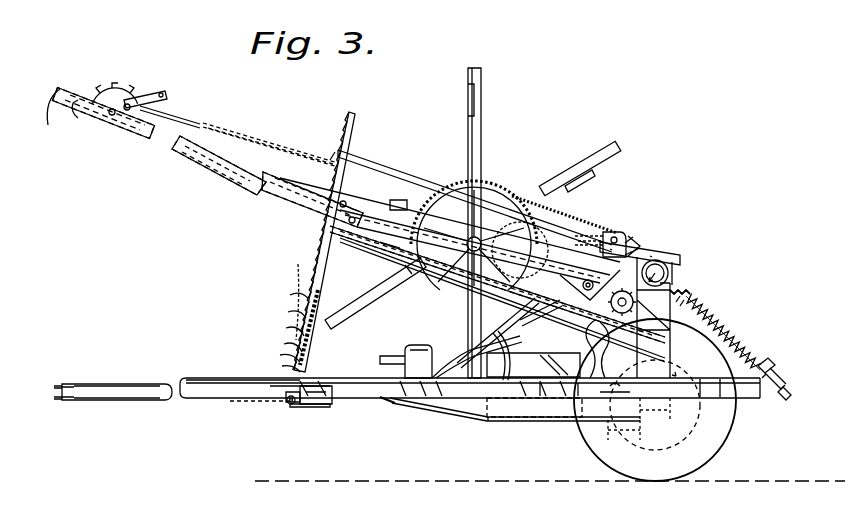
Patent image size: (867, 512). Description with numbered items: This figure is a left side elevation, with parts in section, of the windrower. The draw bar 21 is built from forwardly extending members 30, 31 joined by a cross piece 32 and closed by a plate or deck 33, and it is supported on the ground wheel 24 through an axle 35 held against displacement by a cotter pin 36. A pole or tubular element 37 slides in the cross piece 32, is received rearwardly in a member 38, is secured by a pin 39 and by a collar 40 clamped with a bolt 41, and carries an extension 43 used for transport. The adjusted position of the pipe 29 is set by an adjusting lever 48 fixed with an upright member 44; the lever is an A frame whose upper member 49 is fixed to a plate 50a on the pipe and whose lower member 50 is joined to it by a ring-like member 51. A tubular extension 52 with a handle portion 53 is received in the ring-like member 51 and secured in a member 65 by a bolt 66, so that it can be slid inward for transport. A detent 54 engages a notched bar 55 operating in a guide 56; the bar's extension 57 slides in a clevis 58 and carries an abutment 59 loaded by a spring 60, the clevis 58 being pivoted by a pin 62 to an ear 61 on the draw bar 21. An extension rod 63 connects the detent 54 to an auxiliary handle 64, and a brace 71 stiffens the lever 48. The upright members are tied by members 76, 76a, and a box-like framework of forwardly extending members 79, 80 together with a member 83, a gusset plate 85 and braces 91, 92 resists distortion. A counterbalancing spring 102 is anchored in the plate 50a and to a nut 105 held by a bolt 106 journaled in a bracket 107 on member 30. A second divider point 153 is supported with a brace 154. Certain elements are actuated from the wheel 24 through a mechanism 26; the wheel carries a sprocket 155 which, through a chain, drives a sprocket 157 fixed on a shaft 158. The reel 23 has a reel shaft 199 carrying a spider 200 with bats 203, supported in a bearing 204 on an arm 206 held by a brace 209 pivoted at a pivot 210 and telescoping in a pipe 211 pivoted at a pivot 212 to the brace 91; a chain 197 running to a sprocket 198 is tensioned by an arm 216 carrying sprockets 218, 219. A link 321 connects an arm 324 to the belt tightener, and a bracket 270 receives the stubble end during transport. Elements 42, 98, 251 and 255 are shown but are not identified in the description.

The draw bar 21 is at (433, 422).
The reel 23 is at (612, 122).
The ground wheel 24 is at (720, 452).
The mechanism 26 is at (638, 238).
The pipe 29 is at (670, 270).
The forwardly extending member 30 is at (724, 388).
The forwardly extending member 31 is at (318, 405).
The cross piece 32 is at (290, 406).
The plate 33 is at (338, 360).
The axle 35 is at (668, 398).
The cotter pin 36 is at (640, 395).
The pole 37 is at (205, 377).
The member 38 is at (292, 404).
The pin 39 is at (306, 408).
The collar 40 is at (282, 375).
The bolt 41 is at (285, 404).
The tongue tube 42 is at (61, 377).
The extension 43 is at (362, 376).
The upright member 44 is at (676, 376).
The adjusting lever 48 is at (242, 161).
The upper member 49 is at (575, 224).
The lower member 50 is at (386, 250).
The plate 50a is at (690, 275).
The ring-like member 51 is at (268, 195).
The tubular extension 52 is at (192, 150).
The handle portion 53 is at (74, 114).
The detent 54 is at (304, 234).
The notched bar 55 is at (298, 266).
The guide 56 is at (604, 342).
The extension 57 is at (286, 312).
The clevis 58 is at (288, 295).
The abutment 59 is at (283, 343).
The spring 60 is at (284, 328).
The ear 61 is at (280, 355).
The pin 62 is at (282, 366).
The extension rod 63 is at (204, 108).
The auxiliary handle 64 is at (128, 123).
The member 65 is at (352, 226).
The bolt 66 is at (366, 220).
The brace 71 is at (402, 186).
The member 76 is at (676, 440).
The member 76a is at (631, 432).
The forwardly extending member 79 is at (535, 340).
The forwardly extending member 80 is at (520, 417).
The member 83 is at (492, 345).
The gusset plate 85 is at (533, 366).
The brace 91 is at (547, 366).
The brace 92 is at (552, 383).
The main beam 98 is at (490, 378).
The counterbalancing spring 102 is at (738, 327).
The nut 105 is at (770, 372).
The bolt 106 is at (776, 380).
The bracket 107 is at (788, 396).
The second divider point 153 is at (462, 348).
The brace 154 is at (390, 406).
The sprocket 155 is at (604, 393).
The sprocket 157 is at (688, 296).
The shaft 158 is at (692, 308).
The chain 197 is at (520, 190).
The sprocket 198 is at (450, 290).
The reel shaft 199 is at (462, 180).
The spider 200 is at (481, 146).
The bats 203 is at (468, 100).
The bearing 204 is at (418, 252).
The arm 206 is at (578, 243).
The brace 209 is at (584, 281).
The pivot 210 is at (564, 214).
The pipe 211 is at (588, 285).
The pivot 212 is at (541, 316).
The arm 216 is at (610, 231).
The sprocket 218 is at (637, 222).
The sprocket 219 is at (640, 248).
The rod 251 is at (298, 130).
The cam 255 is at (183, 72).
The bracket 270 is at (611, 302).
The link 321 is at (669, 340).
The arm 324 is at (668, 253).